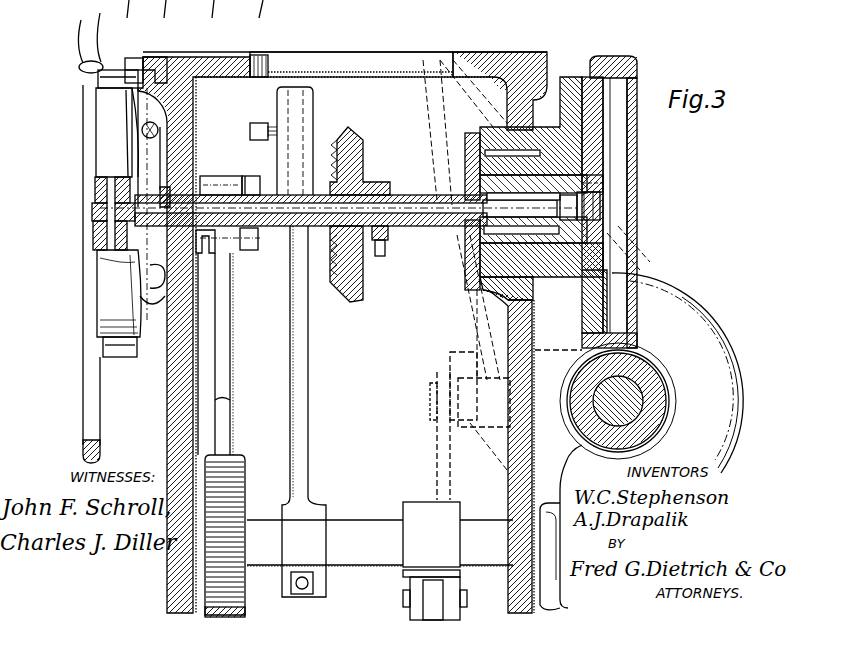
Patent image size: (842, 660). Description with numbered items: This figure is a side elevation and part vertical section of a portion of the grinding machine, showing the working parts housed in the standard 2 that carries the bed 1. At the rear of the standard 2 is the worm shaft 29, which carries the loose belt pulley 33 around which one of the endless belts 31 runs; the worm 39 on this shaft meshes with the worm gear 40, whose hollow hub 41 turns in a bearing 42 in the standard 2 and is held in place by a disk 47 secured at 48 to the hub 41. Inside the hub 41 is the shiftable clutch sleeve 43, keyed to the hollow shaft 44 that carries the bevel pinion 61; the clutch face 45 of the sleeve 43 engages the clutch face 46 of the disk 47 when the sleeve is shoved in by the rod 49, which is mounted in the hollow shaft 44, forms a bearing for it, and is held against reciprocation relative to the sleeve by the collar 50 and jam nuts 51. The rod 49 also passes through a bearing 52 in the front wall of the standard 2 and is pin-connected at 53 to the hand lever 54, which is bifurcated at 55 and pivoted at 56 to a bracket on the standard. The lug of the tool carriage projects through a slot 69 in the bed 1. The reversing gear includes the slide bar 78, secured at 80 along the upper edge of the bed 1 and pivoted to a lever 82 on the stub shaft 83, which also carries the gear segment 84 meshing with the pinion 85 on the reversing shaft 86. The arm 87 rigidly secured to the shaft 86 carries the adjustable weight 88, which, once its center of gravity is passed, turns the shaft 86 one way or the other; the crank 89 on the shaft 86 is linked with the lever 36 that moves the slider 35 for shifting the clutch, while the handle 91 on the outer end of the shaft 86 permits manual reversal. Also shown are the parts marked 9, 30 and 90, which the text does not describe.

The bed 1 is at (206, 63).
The standard 2 is at (176, 390).
The pawl 9 is at (465, 108).
The worm shaft 29 is at (627, 397).
The bracket 30 is at (568, 351).
The endless belts 31 is at (627, 274).
The loose belt pulley 33 is at (703, 393).
The slider 35 is at (467, 390).
The lever 36 is at (446, 442).
The worm 39 is at (661, 383).
The worm gear 40 is at (627, 158).
The hollow hub 41 is at (467, 164).
The bearing 42 is at (467, 281).
The shiftable clutch sleeve 43 is at (604, 182).
The hollow shaft 44 is at (394, 241).
The clutch face 45 is at (467, 182).
The clutch face 46 is at (466, 234).
The disk 47 is at (467, 144).
The securing point 48 is at (467, 254).
The rod 49 is at (98, 212).
The collar 50 is at (600, 217).
The jam nuts 51 is at (603, 203).
The bearing 52 is at (220, 178).
The pin connection 53 is at (98, 190).
The hand lever 54 is at (95, 227).
The bifurcation 55 is at (100, 137).
The pivot 56 is at (118, 79).
The bevel pinion 61 is at (354, 134).
The slot 69 is at (274, 41).
The slide bar 78 is at (158, 74).
The securing point 80 is at (80, 66).
The lever 82 is at (136, 70).
The stub shaft 83 is at (145, 253).
The gear segment 84 is at (218, 302).
The pinion 85 is at (238, 497).
The reversing shaft 86 is at (362, 534).
The arm 87 is at (291, 240).
The adjustable weight 88 is at (306, 127).
The crank 89 is at (407, 589).
The nut 90 is at (408, 604).
The handle 91 is at (88, 160).